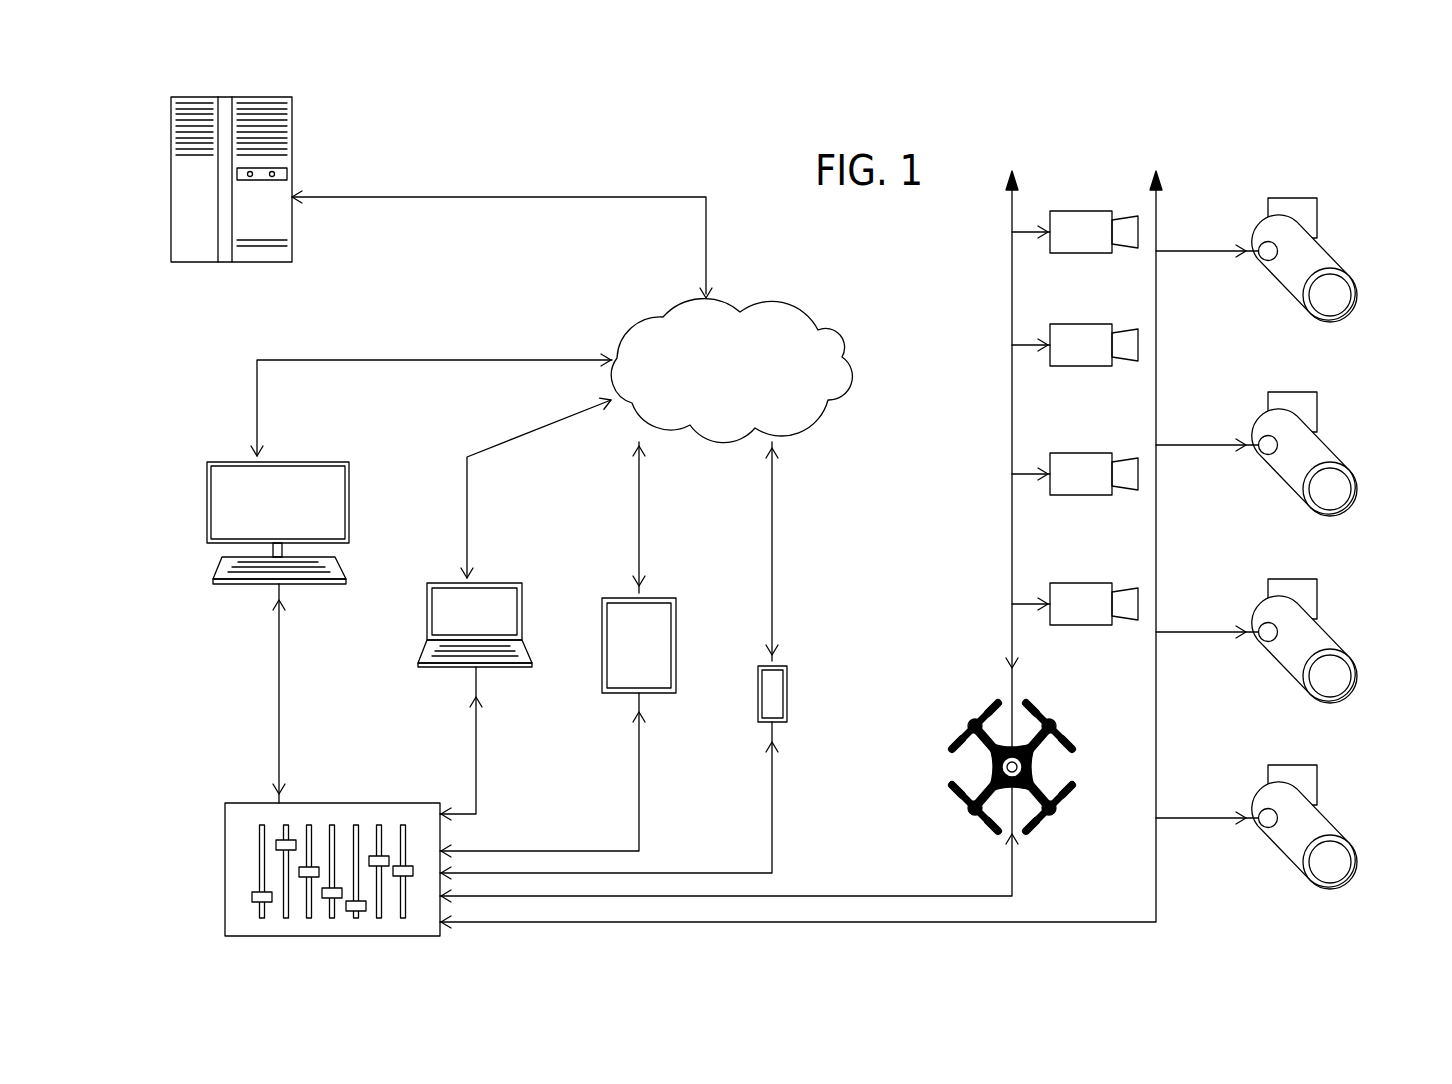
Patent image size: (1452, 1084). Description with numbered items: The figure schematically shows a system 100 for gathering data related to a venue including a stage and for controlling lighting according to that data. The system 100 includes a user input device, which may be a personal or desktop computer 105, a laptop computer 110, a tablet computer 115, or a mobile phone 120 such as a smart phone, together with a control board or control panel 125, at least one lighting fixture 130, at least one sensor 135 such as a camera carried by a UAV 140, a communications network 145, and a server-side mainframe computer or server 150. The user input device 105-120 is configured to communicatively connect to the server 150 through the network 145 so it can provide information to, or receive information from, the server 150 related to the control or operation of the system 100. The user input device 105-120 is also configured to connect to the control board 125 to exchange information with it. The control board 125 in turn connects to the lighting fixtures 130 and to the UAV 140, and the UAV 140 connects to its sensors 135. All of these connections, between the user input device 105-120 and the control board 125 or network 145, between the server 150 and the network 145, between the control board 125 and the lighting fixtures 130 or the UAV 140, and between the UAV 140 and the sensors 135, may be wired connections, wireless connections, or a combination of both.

The system 100 is at (534, 121).
The personal or desktop computer 105 is at (207, 497).
The laptop computer 110 is at (494, 583).
The tablet computer 115 is at (665, 598).
The mobile phone 120 is at (787, 690).
The control board 125 is at (225, 866).
The lighting fixture 130 is at (1338, 252).
The sensor 135 is at (1058, 211).
The UAV 140 is at (988, 768).
The communications network 145 is at (812, 312).
The server 150 is at (262, 262).